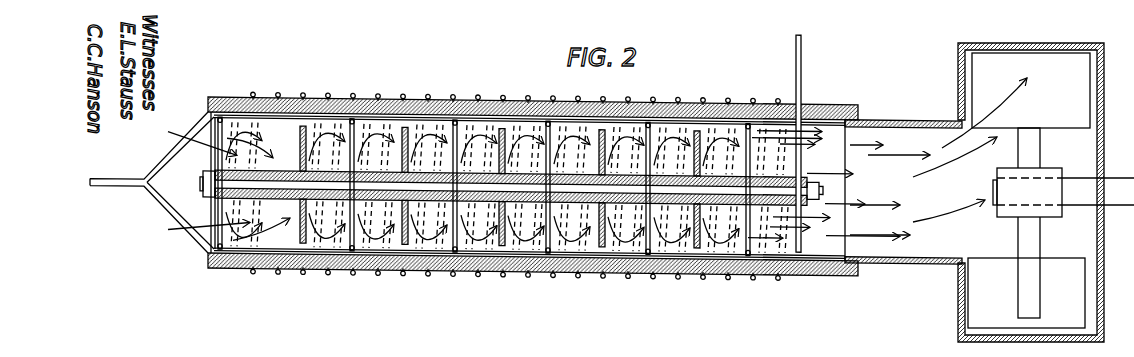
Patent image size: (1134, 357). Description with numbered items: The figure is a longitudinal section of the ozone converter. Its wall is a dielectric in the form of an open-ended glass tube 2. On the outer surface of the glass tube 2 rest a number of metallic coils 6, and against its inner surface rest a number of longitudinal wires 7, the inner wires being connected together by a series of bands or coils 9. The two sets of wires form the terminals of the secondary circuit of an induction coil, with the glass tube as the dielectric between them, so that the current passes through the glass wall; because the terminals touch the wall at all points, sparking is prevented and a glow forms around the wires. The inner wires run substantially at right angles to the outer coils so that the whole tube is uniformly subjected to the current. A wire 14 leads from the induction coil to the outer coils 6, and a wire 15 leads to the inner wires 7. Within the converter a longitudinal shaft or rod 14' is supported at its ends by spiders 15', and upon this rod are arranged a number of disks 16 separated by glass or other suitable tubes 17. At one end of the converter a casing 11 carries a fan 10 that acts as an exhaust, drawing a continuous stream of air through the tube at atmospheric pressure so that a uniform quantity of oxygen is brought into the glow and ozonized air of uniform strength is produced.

The glass tube 2 is at (837, 260).
The metallic coils 6 is at (403, 93).
The longitudinal wires 7 is at (483, 117).
The bands or coils 9 is at (218, 250).
The fan 10 is at (1051, 190).
The casing 11 is at (957, 302).
The wire 14 is at (822, 143).
The longitudinal shaft or rod 14' is at (852, 189).
The wire 15 is at (156, 182).
The spiders 15' is at (863, 229).
The disks 16 is at (320, 138).
The tubes 17 is at (520, 172).